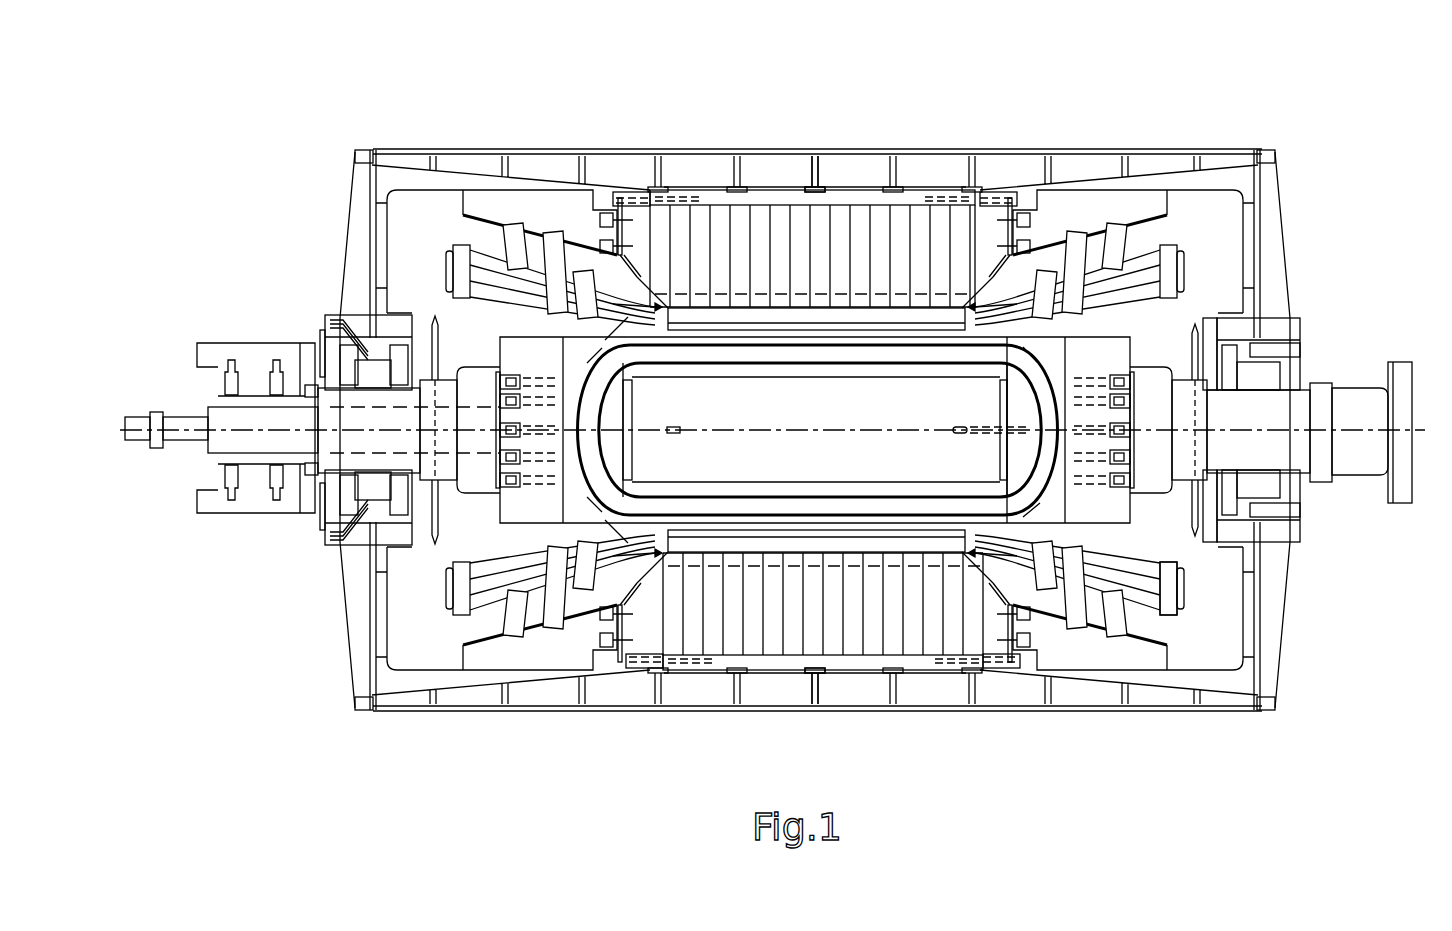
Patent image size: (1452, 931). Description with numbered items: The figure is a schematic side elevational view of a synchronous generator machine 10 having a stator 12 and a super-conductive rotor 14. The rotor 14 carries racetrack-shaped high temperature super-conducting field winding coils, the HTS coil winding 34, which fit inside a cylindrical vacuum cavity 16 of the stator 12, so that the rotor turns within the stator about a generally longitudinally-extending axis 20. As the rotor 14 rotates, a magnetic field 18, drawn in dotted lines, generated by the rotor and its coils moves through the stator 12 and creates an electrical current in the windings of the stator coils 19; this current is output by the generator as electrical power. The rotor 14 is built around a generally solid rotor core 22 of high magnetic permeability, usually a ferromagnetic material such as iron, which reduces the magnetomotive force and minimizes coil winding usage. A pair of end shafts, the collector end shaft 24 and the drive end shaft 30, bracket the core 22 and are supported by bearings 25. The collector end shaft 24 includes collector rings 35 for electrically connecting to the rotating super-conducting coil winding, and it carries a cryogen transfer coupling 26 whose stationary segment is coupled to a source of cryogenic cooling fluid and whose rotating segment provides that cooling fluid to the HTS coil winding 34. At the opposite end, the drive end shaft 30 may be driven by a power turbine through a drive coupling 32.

The synchronous generator machine 10 is at (420, 212).
The stator 12 is at (717, 225).
The rotor 14 is at (524, 514).
The cylindrical vacuum cavity 16 is at (476, 321).
The magnetic field 18 is at (925, 288).
The stator coils 19 is at (1152, 612).
The longitudinally-extending axis 20 is at (268, 432).
The rotor core 22 is at (774, 460).
The collector end shaft 24 is at (398, 410).
The bearings 25 is at (340, 515).
The cryogen transfer coupling 26 is at (175, 416).
The drive end shaft 30 is at (1283, 412).
The drive coupling 32 is at (1401, 500).
The HTS coil winding 34 is at (1050, 340).
The collector rings 35 is at (255, 347).